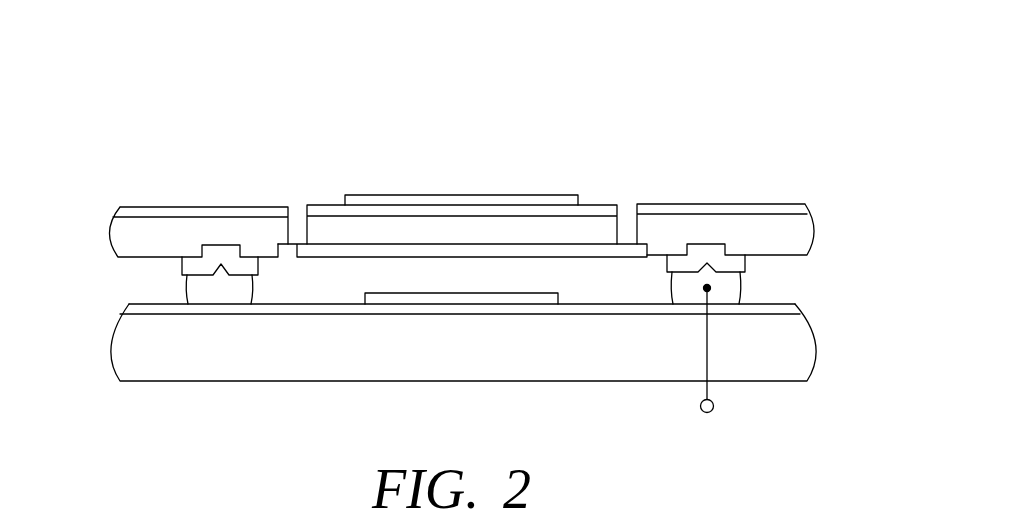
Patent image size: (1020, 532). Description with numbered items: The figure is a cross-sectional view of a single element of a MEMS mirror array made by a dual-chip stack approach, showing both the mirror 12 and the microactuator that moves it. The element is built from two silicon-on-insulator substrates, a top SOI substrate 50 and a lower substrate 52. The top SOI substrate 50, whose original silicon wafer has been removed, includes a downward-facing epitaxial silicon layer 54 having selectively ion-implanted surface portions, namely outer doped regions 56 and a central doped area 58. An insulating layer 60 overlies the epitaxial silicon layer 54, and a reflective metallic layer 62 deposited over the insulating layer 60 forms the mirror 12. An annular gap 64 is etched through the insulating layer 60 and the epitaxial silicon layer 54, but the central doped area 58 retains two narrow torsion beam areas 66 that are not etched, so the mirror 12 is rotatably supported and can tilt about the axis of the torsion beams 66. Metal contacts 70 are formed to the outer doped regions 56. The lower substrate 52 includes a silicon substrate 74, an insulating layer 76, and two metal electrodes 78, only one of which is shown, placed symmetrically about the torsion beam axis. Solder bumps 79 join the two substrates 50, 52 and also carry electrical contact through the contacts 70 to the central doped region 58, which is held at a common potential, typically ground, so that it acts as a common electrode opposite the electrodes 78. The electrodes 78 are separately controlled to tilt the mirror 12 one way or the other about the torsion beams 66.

The mirror 12 is at (468, 173).
The top SOI substrate 50 is at (101, 215).
The lower substrate 52 is at (101, 370).
The epitaxial silicon layer 54 is at (788, 218).
The outer doped regions 56 is at (218, 253).
The central doped area 58 is at (548, 247).
The insulating layer 60 is at (796, 207).
The reflective metallic layer 62 is at (397, 201).
The annular gap 64 is at (298, 233).
The torsion beam areas 66 is at (298, 248).
The metal contacts 70 is at (197, 270).
The silicon substrate 74 is at (790, 354).
The insulating layer 76 is at (781, 305).
The metal electrodes 78 is at (539, 297).
The solder bumps 79 is at (226, 292).